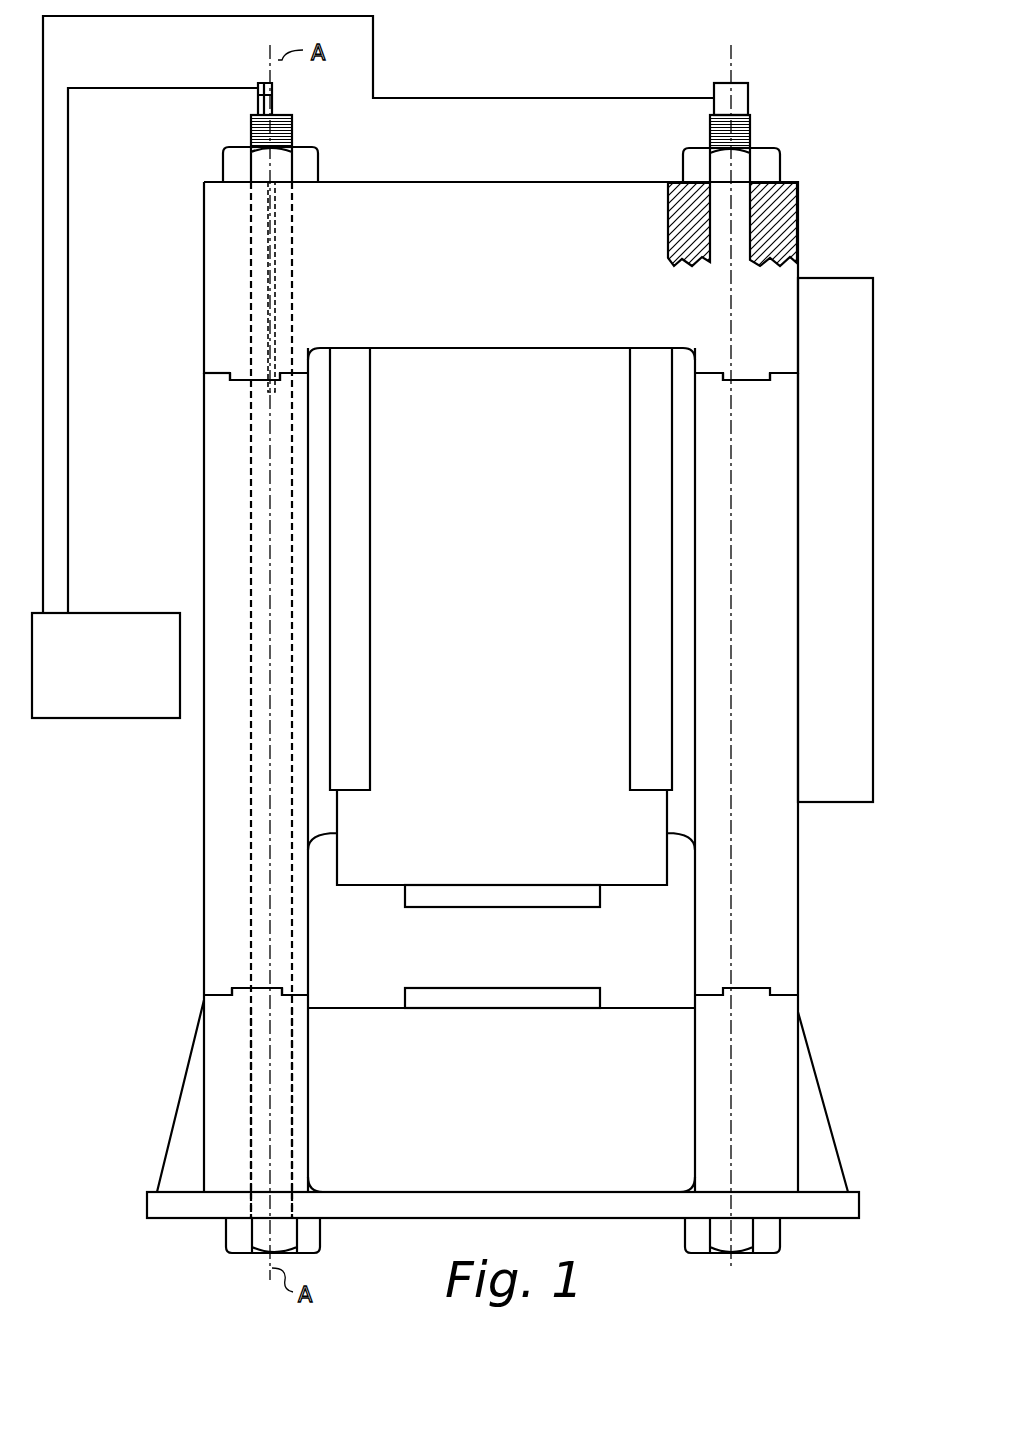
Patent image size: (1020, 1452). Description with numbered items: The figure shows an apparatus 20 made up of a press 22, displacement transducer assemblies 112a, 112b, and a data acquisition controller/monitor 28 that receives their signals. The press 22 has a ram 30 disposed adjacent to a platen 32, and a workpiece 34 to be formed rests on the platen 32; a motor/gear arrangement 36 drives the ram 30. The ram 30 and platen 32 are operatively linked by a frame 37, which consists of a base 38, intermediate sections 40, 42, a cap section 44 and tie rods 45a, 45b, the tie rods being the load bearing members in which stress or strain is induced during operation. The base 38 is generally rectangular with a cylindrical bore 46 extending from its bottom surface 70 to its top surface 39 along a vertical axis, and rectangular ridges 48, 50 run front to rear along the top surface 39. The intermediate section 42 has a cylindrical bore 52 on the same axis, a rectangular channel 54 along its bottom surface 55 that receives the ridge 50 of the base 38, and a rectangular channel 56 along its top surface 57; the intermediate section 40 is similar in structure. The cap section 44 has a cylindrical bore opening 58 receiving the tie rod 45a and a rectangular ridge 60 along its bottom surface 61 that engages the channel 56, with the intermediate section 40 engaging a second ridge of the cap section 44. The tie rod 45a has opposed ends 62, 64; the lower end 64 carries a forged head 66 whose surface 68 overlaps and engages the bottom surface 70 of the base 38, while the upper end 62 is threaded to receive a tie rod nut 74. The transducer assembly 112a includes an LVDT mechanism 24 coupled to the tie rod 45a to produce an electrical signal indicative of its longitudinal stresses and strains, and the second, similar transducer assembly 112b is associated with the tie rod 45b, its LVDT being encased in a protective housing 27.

The apparatus 20 is at (112, 805).
The press 22 is at (505, 178).
The LVDT mechanism 24 is at (278, 95).
The protective housing 27 is at (722, 87).
The data acquisition controller/monitor 28 is at (108, 613).
The ram 30 is at (562, 907).
The platen 32 is at (630, 1008).
The workpiece 34 is at (462, 990).
The motor/gear arrangement 36 is at (838, 802).
The frame 37 is at (185, 560).
The base 38 is at (800, 1125).
The top surface 39 is at (305, 988).
The intermediate section 40 is at (798, 908).
The intermediate section 42 is at (204, 512).
The cap section 44 is at (204, 232).
The tie rod 45a is at (263, 268).
The tie rod 45b is at (742, 218).
The cylindrical bore 46 is at (251, 1083).
The rectangular ridge 48 is at (770, 992).
The rectangular ridge 50 is at (247, 987).
The cylindrical bore 52 is at (251, 840).
The rectangular channel 54 is at (243, 990).
The bottom surface 55 is at (207, 1008).
The rectangular channel 56 is at (243, 372).
The top surface 57 is at (215, 375).
The cylindrical bore opening 58 is at (293, 288).
The rectangular ridge 60 is at (232, 380).
The bottom surface 61 is at (308, 400).
The first end of tie rod 62 is at (242, 128).
The second end of tie rod 64 is at (172, 1262).
The forged head 66 is at (312, 1232).
The head surface 68 is at (240, 1218).
The bottom surface of base 70 is at (592, 1218).
The tie rod nut 74 is at (318, 166).
The displacement transducer assembly 112a is at (250, 75).
The second transducer assembly 112b is at (760, 98).